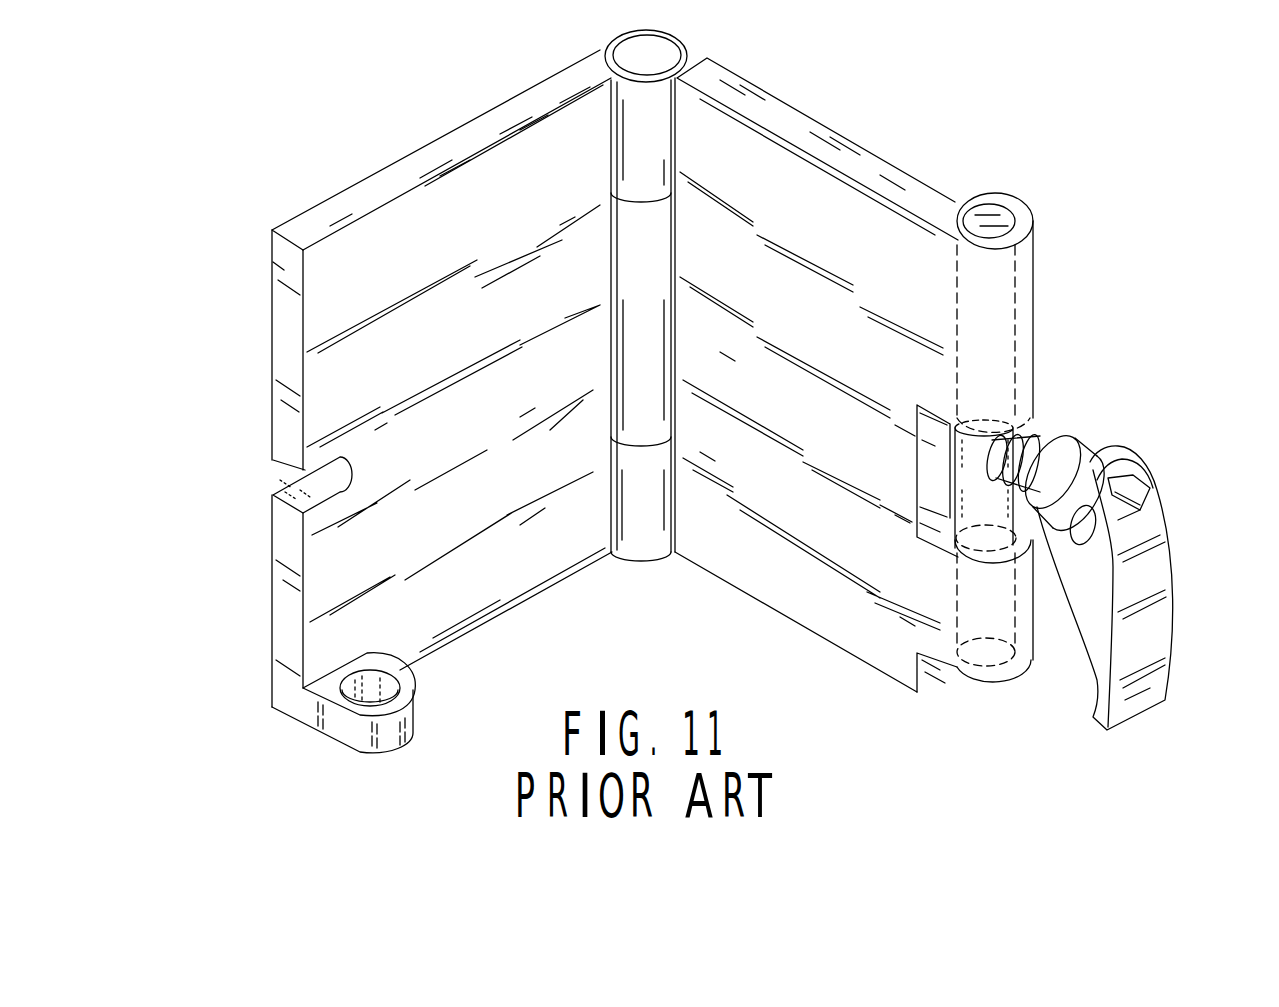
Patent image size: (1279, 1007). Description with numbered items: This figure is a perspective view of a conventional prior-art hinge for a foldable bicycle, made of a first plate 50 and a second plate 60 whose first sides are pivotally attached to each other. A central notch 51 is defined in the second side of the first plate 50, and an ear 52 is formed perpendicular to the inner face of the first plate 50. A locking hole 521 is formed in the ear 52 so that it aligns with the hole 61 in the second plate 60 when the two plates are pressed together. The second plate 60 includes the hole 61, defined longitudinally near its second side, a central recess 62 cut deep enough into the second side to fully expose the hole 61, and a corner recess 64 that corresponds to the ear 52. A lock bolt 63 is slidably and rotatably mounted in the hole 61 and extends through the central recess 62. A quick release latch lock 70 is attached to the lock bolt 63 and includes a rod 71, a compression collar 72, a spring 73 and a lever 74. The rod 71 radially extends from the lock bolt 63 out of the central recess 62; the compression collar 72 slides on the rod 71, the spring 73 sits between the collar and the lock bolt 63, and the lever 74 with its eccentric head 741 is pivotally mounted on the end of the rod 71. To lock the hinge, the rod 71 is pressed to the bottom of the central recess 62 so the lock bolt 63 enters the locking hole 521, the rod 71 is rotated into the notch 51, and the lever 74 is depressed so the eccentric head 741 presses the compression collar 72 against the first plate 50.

The first plate 50 is at (380, 230).
The central notch 51 is at (280, 468).
The ear 52 is at (335, 733).
The locking hole 521 is at (373, 695).
The second plate 60 is at (813, 173).
The hole 61 is at (993, 205).
The central recess 62 is at (922, 505).
The lock bolt 63 is at (972, 440).
The corner recess 64 is at (928, 672).
The quick release latch lock 70 is at (1110, 432).
The rod 71 is at (1025, 445).
The compression collar 72 is at (1037, 508).
The spring 73 is at (1045, 430).
The lever 74 is at (1157, 662).
The eccentric head 741 is at (1153, 477).